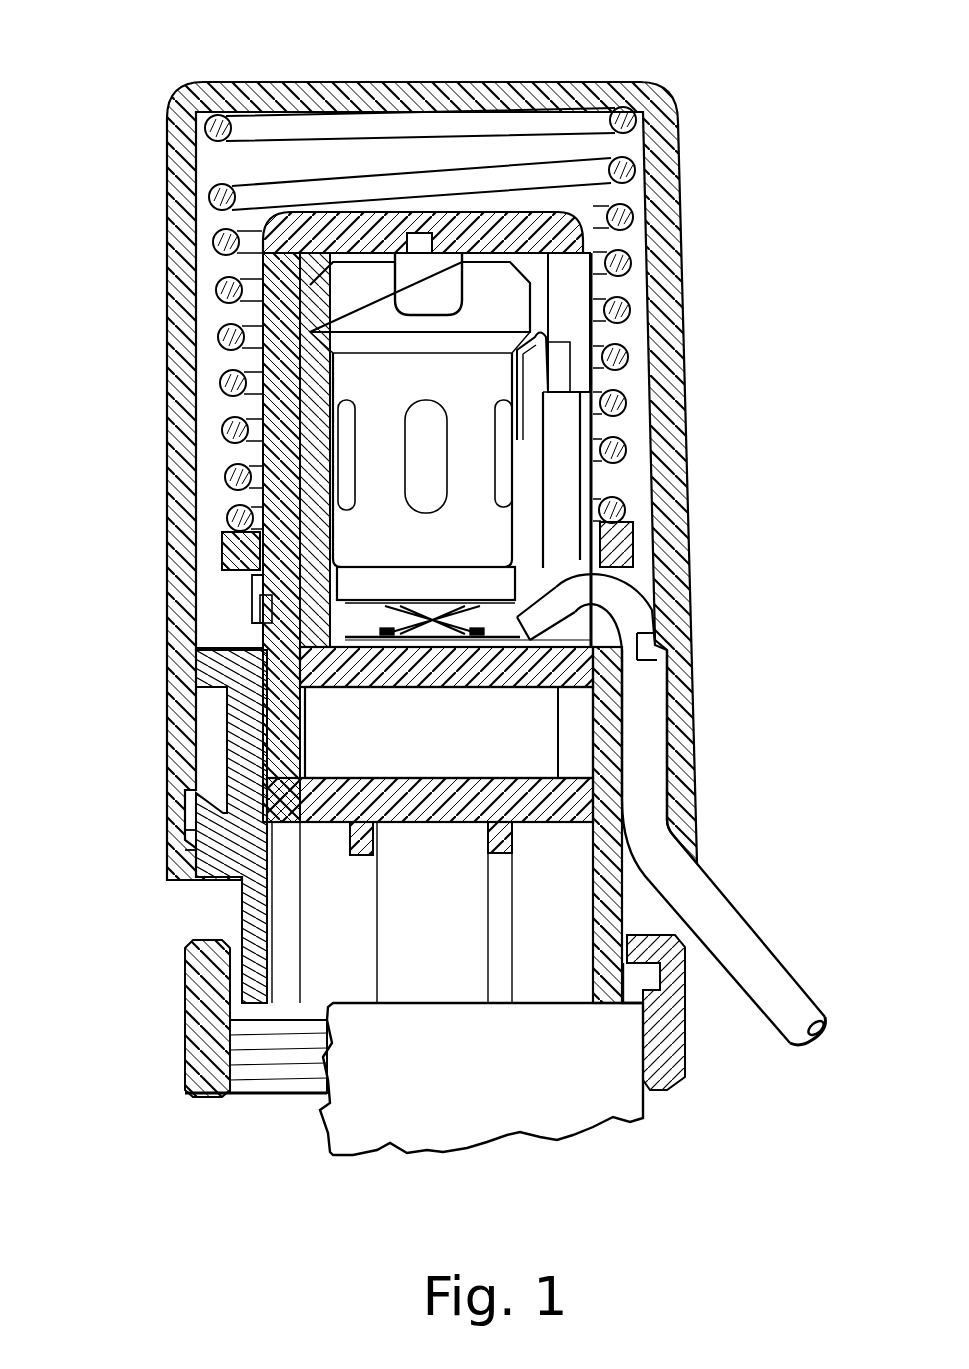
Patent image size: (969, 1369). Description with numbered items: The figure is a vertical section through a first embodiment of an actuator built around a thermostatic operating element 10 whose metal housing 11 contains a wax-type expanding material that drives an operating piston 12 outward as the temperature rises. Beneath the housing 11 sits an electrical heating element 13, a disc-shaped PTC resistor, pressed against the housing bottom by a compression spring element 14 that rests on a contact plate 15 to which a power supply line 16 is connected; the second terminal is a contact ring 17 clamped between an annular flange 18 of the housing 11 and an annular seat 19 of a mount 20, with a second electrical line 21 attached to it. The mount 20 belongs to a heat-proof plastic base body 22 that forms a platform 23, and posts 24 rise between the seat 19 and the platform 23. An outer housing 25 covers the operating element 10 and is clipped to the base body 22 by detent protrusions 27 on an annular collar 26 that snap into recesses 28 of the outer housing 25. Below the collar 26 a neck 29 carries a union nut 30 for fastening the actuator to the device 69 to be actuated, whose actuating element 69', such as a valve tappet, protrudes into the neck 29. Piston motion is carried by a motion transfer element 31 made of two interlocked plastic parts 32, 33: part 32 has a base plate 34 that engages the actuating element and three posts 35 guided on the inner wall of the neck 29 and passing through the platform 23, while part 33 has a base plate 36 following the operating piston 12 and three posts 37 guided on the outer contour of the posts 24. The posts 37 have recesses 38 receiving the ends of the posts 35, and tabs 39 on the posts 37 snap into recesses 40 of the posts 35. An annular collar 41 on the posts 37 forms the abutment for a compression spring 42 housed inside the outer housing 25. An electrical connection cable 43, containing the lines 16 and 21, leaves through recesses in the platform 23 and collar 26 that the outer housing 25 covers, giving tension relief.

The thermostatic operating element 10 is at (342, 300).
The metal housing 11 is at (360, 413).
The operating piston 12 is at (423, 270).
The electrical heating element 13 is at (405, 580).
The compression spring element 14 is at (412, 683).
The contact plate 15 is at (340, 683).
The power supply line 16 is at (650, 630).
The contact ring 17 is at (545, 330).
The annular flange 18 is at (318, 305).
The annular seat 19 is at (322, 430).
The mount 20 is at (322, 485).
The second electrical line 21 is at (567, 493).
The base body 22 is at (212, 763).
The platform 23 is at (215, 690).
The posts 24 is at (300, 457).
The outer housing 25 is at (373, 100).
The annular collar 26 is at (218, 867).
The detent protrusions 27 is at (196, 852).
The recesses 28 is at (196, 828).
The neck 29 is at (280, 910).
The union nut 30 is at (205, 1042).
The motion transfer element 31 is at (246, 220).
The part of the motion transfer element 32 is at (240, 745).
The part of the motion transfer element 33 is at (235, 262).
The base plate 34 is at (387, 815).
The posts 35 is at (467, 730).
The base plate 36 is at (387, 220).
The posts 37 is at (320, 348).
The recesses 38 is at (300, 574).
The tabs 39 is at (298, 628).
The recesses 40 is at (288, 680).
The annular collar 41 is at (235, 555).
The compression spring 42 is at (590, 348).
The electrical connection cable 43 is at (642, 777).
The device to be actuated 69 is at (481, 1079).
The actuating element 69' is at (553, 628).